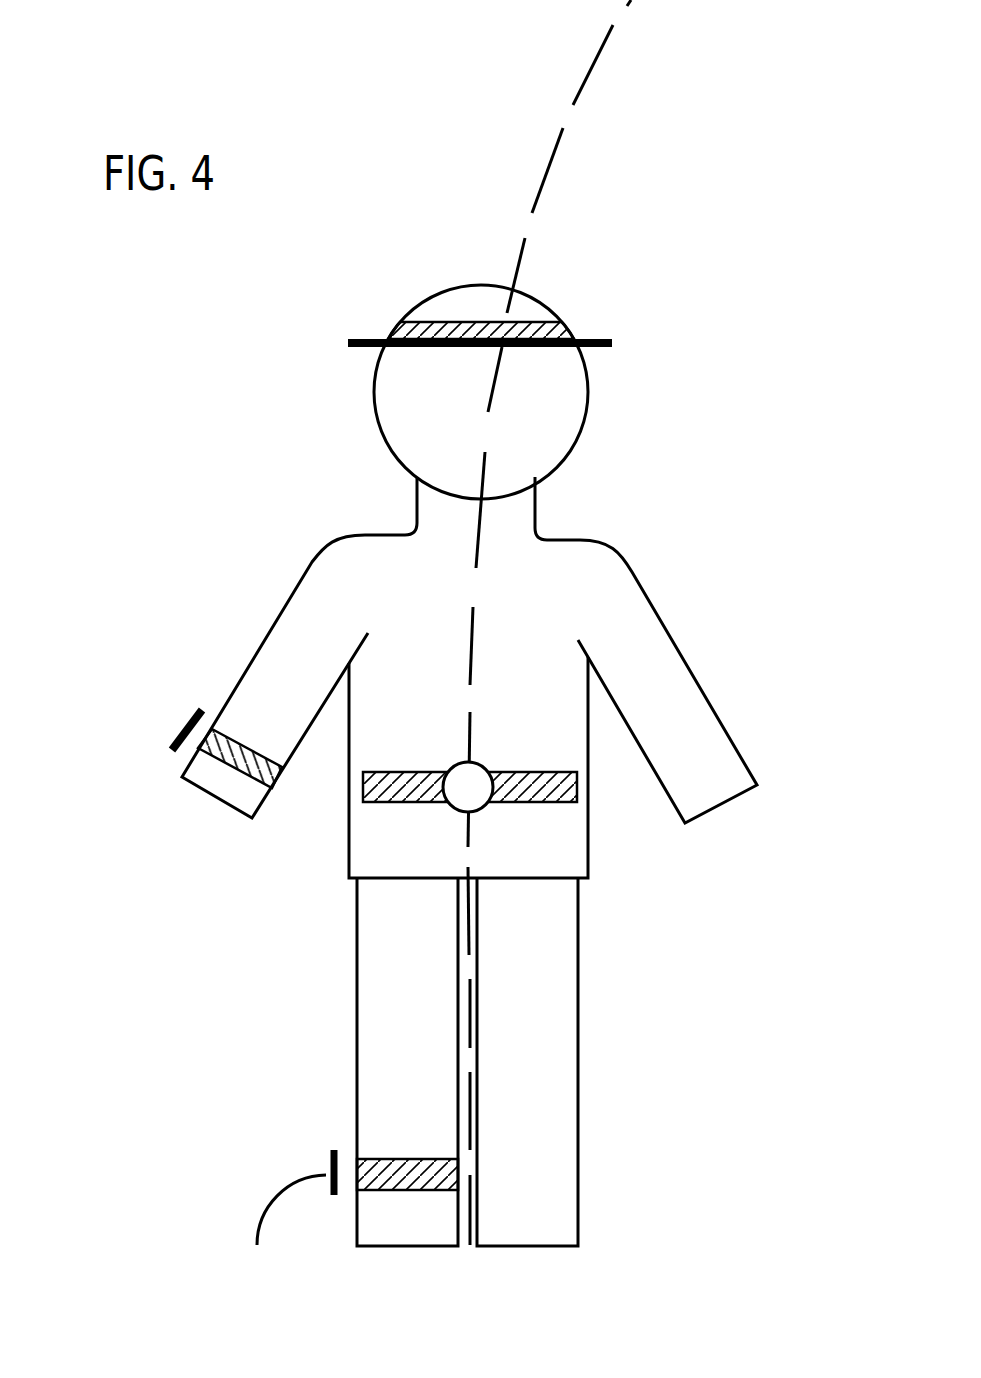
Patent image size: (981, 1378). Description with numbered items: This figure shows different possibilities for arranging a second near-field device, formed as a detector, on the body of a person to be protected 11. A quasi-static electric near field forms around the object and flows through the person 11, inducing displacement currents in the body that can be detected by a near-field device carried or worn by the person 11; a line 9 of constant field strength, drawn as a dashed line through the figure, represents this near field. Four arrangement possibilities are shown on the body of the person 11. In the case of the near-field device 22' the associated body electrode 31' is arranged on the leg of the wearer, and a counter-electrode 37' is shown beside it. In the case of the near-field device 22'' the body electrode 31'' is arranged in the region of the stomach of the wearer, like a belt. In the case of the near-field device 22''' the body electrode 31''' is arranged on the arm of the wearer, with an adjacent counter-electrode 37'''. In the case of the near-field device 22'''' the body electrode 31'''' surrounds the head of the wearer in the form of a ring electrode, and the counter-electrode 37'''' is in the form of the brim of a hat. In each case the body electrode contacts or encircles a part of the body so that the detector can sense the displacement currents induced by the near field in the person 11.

The line of constant field strength 9 is at (593, 62).
The person to be protected 11 is at (548, 613).
The near-field device 22' is at (352, 1212).
The near-field device 22'' is at (520, 845).
The near-field device 22''' is at (217, 790).
The near-field device 22'''' is at (484, 321).
The body electrode 31' is at (407, 1242).
The body electrode 31'' is at (470, 819).
The body electrode 31''' is at (269, 799).
The body electrode 31'''' is at (452, 297).
The ankle sensor 37' is at (304, 1237).
The wrist sensor 37''' is at (148, 731).
The counter-electrode 37'''' is at (439, 372).